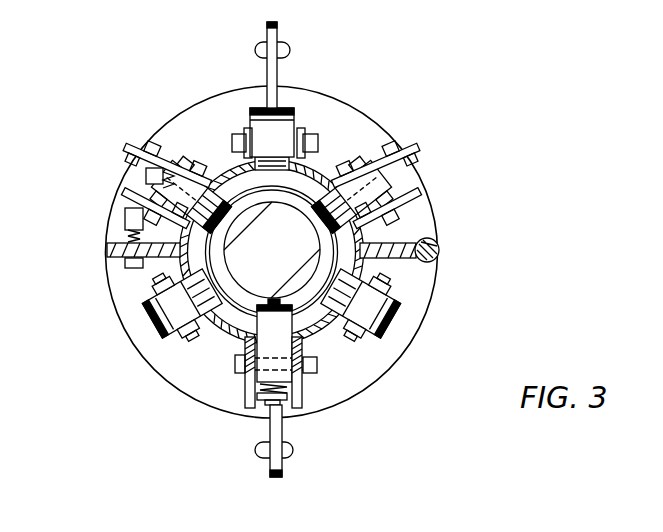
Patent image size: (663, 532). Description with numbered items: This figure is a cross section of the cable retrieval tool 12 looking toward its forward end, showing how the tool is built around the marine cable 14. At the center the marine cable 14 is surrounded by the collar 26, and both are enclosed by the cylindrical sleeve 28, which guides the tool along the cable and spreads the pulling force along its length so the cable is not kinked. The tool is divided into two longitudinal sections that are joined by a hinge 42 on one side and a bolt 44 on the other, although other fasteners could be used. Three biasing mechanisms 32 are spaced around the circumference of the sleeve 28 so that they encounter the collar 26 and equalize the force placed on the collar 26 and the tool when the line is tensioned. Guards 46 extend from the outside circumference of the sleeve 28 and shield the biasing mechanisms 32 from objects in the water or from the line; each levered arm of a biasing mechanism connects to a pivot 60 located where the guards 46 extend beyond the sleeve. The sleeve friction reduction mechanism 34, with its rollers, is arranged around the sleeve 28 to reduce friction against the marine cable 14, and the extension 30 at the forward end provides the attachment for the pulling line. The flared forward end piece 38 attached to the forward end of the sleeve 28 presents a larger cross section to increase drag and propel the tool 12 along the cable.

The cable retrieval tool 12 is at (359, 104).
The marine cable 14 is at (310, 247).
The collar 26 is at (383, 143).
The cylindrical sleeve 28 is at (325, 177).
The extension 30 is at (278, 28).
The biasing mechanism 32 is at (380, 196).
The sleeve friction reduction mechanism 34 is at (320, 160).
The flared forward end piece 38 is at (206, 98).
The hinge 42 is at (437, 256).
The bolt 44 is at (125, 215).
The guards 46 is at (340, 172).
The pivot 60 is at (150, 170).